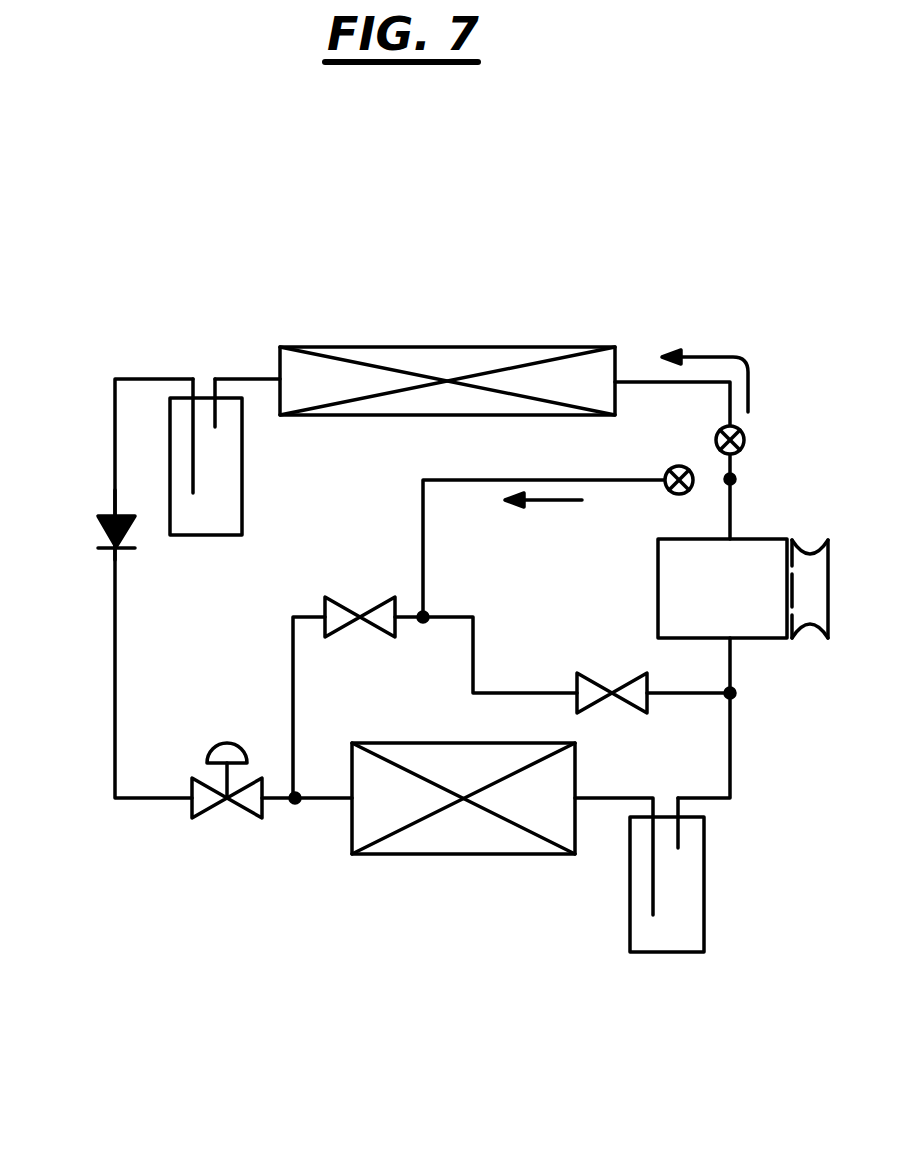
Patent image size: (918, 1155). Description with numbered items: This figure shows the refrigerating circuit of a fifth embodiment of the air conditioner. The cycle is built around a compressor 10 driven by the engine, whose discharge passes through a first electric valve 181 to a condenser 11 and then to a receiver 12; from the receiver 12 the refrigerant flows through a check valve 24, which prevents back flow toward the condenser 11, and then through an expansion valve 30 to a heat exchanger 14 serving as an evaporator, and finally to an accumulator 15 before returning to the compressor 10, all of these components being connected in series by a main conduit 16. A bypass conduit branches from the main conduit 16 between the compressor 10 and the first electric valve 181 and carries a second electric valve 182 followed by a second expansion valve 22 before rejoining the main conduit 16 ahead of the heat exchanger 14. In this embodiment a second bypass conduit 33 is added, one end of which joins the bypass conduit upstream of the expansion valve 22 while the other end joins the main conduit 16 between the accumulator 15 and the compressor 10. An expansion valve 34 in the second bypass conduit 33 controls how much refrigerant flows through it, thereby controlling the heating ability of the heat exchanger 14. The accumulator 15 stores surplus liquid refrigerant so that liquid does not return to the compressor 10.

The compressor 10 is at (762, 628).
The condenser 11 is at (450, 357).
The receiver 12 is at (205, 397).
The heat exchanger 14 is at (470, 840).
The accumulator 15 is at (704, 893).
The main conduit 16 is at (718, 801).
The second expansion valve 22 is at (342, 598).
The check valve 24 is at (97, 527).
The expansion valve 30 is at (206, 815).
The second bypass conduit 33 is at (672, 697).
The expansion valve 34 is at (590, 672).
The first electric valve 181 is at (746, 441).
The second electric valve 182 is at (668, 468).